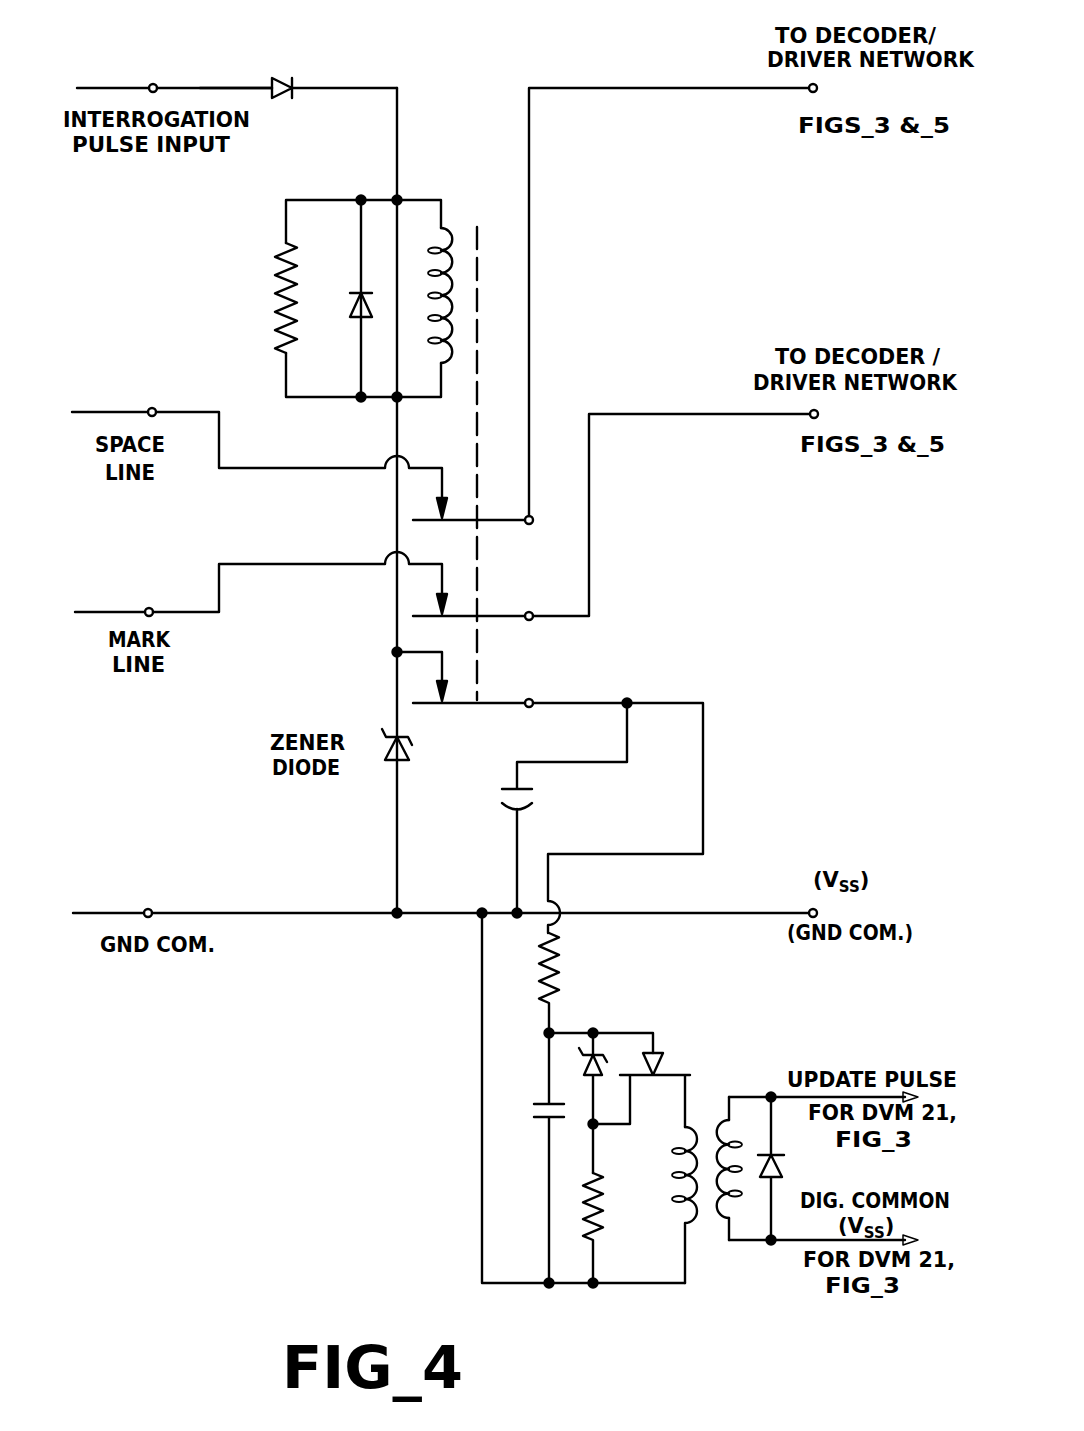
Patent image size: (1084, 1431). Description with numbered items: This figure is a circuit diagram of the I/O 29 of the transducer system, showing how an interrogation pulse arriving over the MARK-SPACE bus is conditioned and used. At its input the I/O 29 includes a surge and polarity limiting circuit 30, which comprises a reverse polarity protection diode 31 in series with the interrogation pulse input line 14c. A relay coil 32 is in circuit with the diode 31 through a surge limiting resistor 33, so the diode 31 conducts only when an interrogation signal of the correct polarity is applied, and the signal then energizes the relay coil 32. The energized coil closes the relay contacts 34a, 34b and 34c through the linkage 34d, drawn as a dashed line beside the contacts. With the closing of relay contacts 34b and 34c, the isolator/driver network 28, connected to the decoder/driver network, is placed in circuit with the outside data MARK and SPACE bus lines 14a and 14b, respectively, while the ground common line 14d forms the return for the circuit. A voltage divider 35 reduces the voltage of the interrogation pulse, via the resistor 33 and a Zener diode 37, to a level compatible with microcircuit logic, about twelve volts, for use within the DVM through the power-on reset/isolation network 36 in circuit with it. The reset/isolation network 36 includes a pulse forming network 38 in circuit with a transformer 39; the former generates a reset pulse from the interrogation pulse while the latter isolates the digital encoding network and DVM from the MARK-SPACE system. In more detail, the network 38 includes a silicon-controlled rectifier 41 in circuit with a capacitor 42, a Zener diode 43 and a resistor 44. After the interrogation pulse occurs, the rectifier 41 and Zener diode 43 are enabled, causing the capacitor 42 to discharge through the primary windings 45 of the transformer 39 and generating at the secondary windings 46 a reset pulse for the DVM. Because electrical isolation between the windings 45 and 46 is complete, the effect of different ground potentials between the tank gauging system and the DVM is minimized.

The MARK bus line 14a is at (122, 610).
The SPACE bus line 14b is at (115, 410).
The MARK-SPACE conductor bus line 14c is at (123, 87).
The MARK-SPACE conductor bus line 14d is at (113, 910).
The isolator/driver network 28 is at (859, 246).
The I/O 29 is at (240, 79).
The surge and polarity limiting circuit 30 is at (378, 148).
The reverse polarity protection diode 31 is at (284, 78).
The relay coil 32 is at (433, 286).
The surge limiting resistor 33 is at (276, 291).
The relay contact 34a is at (487, 523).
The relay contact 34b is at (487, 619).
The relay contact 34c is at (487, 706).
The relay linkage 34d is at (481, 230).
The voltage divider 35 is at (498, 833).
The power-on reset/isolation network 36 is at (478, 1120).
The Zener diode 37 is at (409, 752).
The pulse forming network 38 is at (573, 1016).
The transformer 39 is at (709, 1226).
The silicon-controlled rectifier 41 is at (669, 1052).
The capacitor 42 is at (532, 1108).
The Zener diode 43 is at (603, 1056).
The resistor 44 is at (538, 968).
The primary windings 45 is at (680, 1186).
The secondary windings 46 is at (733, 1200).